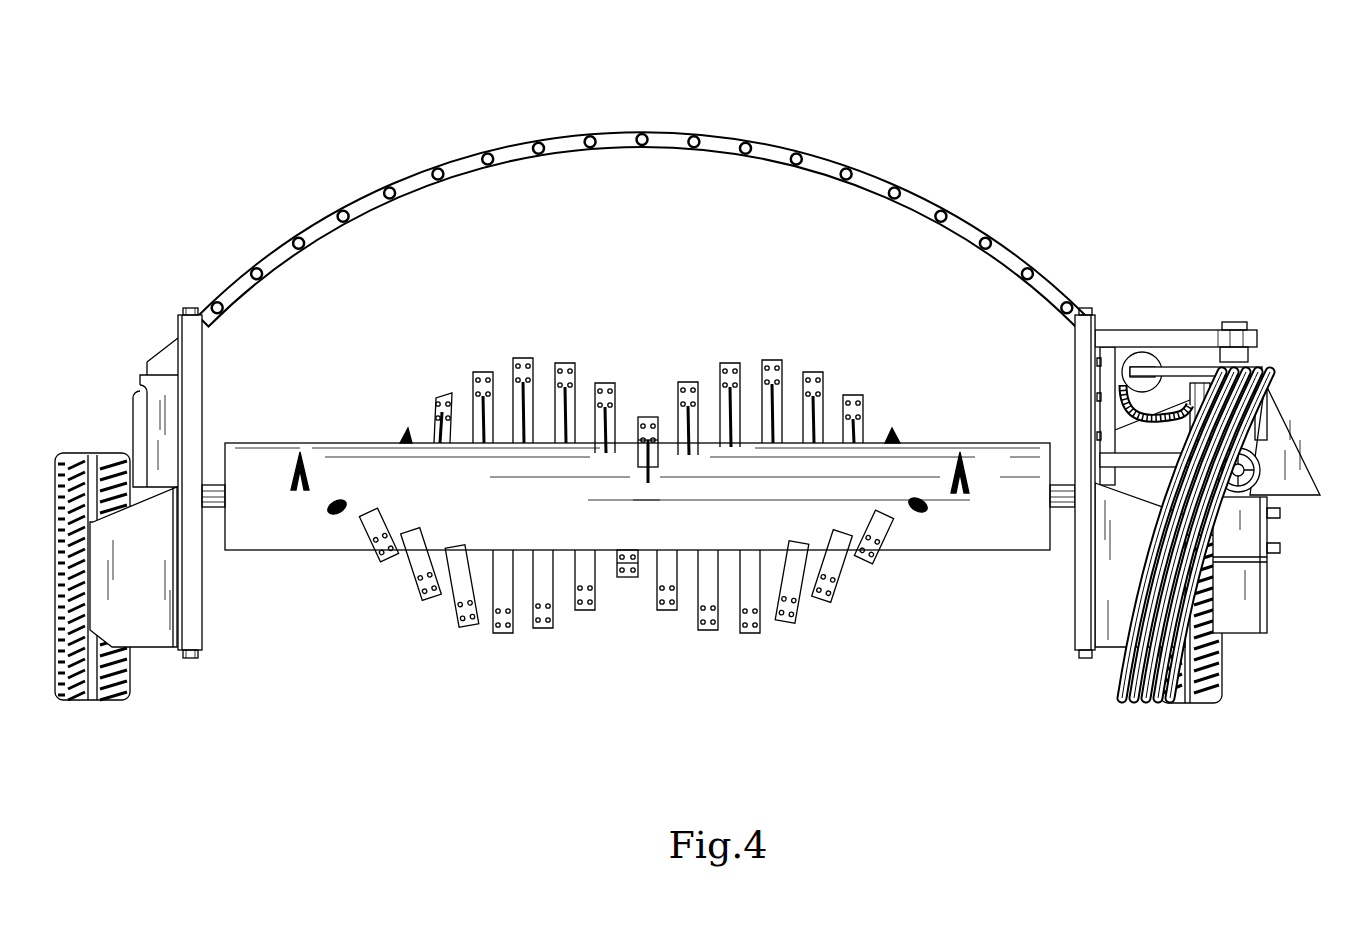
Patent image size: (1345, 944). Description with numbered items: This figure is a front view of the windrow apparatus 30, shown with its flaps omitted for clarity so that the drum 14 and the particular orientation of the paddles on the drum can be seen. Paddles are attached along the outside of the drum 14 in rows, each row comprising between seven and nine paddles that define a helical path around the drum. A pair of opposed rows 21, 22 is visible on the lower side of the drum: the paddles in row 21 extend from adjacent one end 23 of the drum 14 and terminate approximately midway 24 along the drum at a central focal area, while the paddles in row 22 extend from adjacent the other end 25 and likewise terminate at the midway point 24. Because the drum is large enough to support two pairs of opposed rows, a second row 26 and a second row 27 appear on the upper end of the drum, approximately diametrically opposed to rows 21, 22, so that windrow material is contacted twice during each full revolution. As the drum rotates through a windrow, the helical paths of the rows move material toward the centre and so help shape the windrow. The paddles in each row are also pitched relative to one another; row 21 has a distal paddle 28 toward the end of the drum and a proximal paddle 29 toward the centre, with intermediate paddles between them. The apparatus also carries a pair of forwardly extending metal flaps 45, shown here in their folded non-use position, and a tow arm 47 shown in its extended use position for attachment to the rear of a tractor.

The drum 14 is at (997, 440).
The first row of paddles 21 is at (273, 463).
The opposed row of paddles 22 is at (987, 463).
The end of drum 23 is at (253, 535).
The midway point 24 is at (628, 655).
The other end of drum 25 is at (1023, 532).
The second row of paddles 26 is at (632, 392).
The second row of paddles 27 is at (915, 432).
The distal paddle 28 is at (296, 452).
The proximal paddle 29 is at (628, 577).
The apparatus 30 is at (1058, 178).
The flaps 45 is at (124, 584).
The tow arm 47 is at (1278, 340).